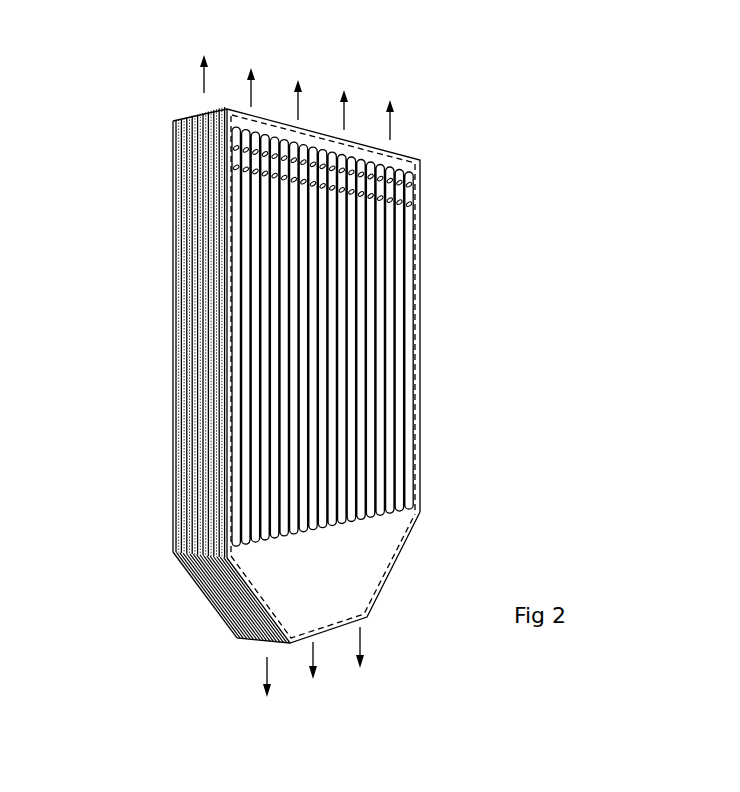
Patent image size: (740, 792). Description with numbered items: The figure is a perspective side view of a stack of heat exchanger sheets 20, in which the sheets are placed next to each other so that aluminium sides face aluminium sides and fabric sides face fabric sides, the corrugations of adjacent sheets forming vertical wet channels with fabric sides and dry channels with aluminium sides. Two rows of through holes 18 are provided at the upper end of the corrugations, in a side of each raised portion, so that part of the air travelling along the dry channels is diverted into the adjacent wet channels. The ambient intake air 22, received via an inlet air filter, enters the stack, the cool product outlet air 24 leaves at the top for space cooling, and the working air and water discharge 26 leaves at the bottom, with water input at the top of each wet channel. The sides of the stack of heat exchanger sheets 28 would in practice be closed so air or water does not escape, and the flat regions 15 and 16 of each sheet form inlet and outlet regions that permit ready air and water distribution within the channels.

The stack of heat exchanger sheets 20 is at (341, 361).
The flat region 15 is at (420, 160).
The through holes 18 is at (408, 205).
The sides of the stack of heat exchanger sheets 28 is at (190, 421).
The ambient intake air 22 is at (226, 611).
The flat region 16 is at (358, 583).
The cool product outlet air 24 is at (204, 81).
The working air and water discharge 26 is at (267, 667).